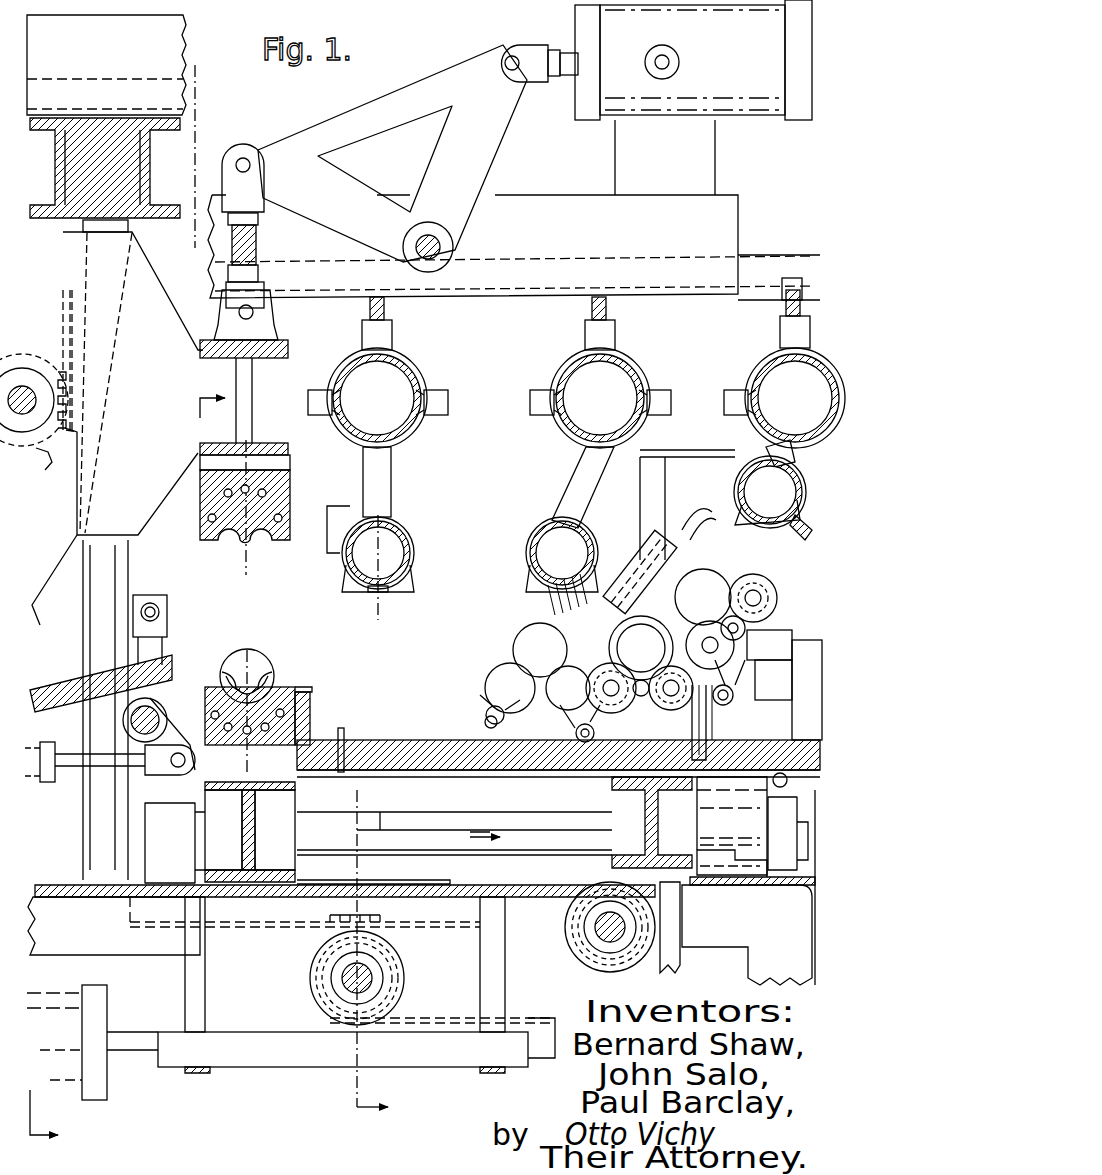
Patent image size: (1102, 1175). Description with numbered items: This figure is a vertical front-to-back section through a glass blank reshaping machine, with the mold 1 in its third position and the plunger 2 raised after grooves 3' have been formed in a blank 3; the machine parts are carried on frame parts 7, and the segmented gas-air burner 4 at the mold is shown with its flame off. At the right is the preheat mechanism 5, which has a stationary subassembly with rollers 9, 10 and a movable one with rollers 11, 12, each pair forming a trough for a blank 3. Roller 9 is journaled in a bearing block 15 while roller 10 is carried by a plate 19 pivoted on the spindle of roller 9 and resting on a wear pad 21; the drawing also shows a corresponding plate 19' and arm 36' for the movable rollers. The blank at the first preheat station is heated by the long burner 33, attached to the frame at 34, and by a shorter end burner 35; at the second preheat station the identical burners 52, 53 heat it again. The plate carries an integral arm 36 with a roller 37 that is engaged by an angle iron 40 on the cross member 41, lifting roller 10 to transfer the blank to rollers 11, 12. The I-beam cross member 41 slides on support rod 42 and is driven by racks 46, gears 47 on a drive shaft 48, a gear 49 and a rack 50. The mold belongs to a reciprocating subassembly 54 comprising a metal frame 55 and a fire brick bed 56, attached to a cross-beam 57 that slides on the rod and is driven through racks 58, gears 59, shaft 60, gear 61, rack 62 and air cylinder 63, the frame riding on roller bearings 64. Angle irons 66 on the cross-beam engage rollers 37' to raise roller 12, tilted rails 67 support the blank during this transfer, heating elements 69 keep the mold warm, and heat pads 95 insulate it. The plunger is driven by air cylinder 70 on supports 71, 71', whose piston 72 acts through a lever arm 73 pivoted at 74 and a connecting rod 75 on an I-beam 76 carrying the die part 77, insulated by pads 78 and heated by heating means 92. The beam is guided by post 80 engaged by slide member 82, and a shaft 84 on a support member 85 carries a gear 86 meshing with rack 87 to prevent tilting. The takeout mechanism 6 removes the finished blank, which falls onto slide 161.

The mold 1 is at (295, 682).
The plunger 2 is at (270, 545).
The blank 3 is at (477, 659).
The grooves 3' is at (286, 652).
The elongated segmented gas-air burner 4 is at (404, 505).
The preheat mechanism 5 is at (680, 630).
The blank removing means 6 is at (172, 650).
The frame parts 7 is at (766, 262).
The roller 9 is at (688, 618).
The roller 10 is at (778, 584).
The roller 11 is at (503, 668).
The roller 12 is at (572, 668).
The bearing block 15 is at (784, 632).
The plate 19 is at (749, 633).
The gear 19' is at (671, 700).
The wear pad 21 is at (790, 665).
The elongated gas-air burner 33 is at (762, 444).
The burner attachment 34 is at (776, 330).
The shorter burner 35 is at (800, 548).
The arm 36 is at (744, 682).
The gear 36' is at (552, 697).
The roller 37 is at (755, 699).
The roller 37' is at (520, 723).
The angle iron 40 is at (708, 722).
The supporting cross member 41 is at (680, 792).
The stationary support rod 42 is at (462, 811).
The rack member 46 is at (732, 868).
The gear 47 is at (568, 896).
The drive shaft 48 is at (598, 928).
The gear 49 is at (668, 918).
The rack 50 is at (650, 975).
The burner 52 is at (556, 493).
The burner 53 is at (630, 580).
The subassembly 54 is at (390, 740).
The metal frame 55 is at (405, 778).
The fire brick bed 56 is at (404, 742).
The cross-beam support member 57 is at (295, 794).
The rack member 58 is at (310, 920).
The gear 59 is at (395, 926).
The shaft 60 is at (372, 978).
The gear 61 is at (402, 1008).
The rack 62 is at (432, 1020).
The air cylinder 63 is at (62, 992).
The roller bearing 64 is at (763, 785).
The angle iron 66 is at (344, 742).
The tilted rail 67 is at (305, 688).
The sheathed electric heating element 69 is at (295, 712).
The air cylinder 70 is at (745, 113).
The support 71 is at (421, 156).
The support 71' is at (689, 157).
The piston 72 is at (555, 50).
The lever arm 73 is at (500, 140).
The pivot 74 is at (454, 247).
The connecting rod 75 is at (262, 243).
The I-beam 76 is at (286, 360).
The die part 77 is at (290, 505).
The heat insulating pads 78 is at (290, 466).
The upstanding post 80 is at (82, 226).
The slide member 82 is at (145, 263).
The shaft 84 is at (52, 370).
The stationary support member 85 is at (43, 470).
The gear 86 is at (68, 440).
The rack 87 is at (62, 312).
The heating means 92 is at (283, 518).
The heat pads 95 is at (205, 778).
The slide 161 is at (72, 670).